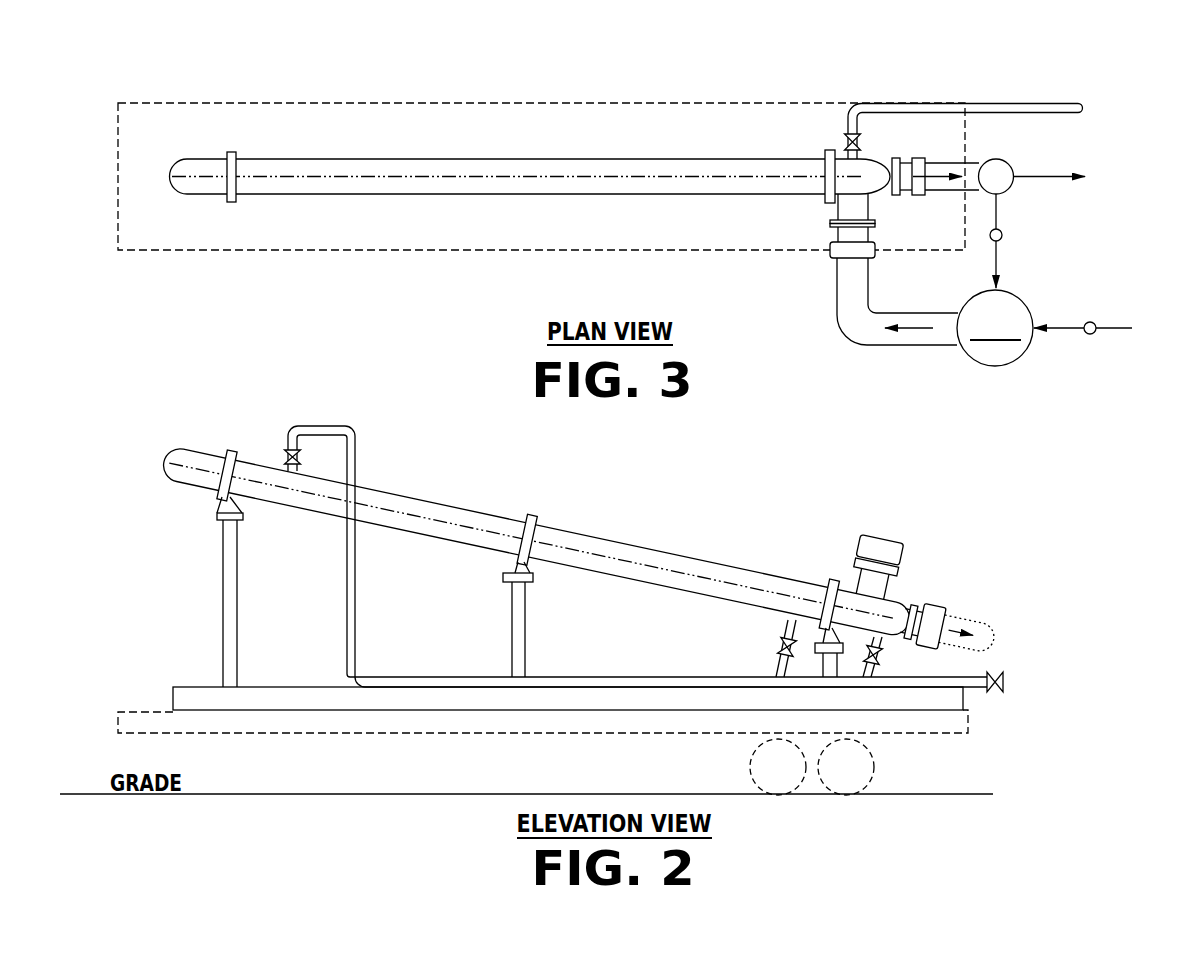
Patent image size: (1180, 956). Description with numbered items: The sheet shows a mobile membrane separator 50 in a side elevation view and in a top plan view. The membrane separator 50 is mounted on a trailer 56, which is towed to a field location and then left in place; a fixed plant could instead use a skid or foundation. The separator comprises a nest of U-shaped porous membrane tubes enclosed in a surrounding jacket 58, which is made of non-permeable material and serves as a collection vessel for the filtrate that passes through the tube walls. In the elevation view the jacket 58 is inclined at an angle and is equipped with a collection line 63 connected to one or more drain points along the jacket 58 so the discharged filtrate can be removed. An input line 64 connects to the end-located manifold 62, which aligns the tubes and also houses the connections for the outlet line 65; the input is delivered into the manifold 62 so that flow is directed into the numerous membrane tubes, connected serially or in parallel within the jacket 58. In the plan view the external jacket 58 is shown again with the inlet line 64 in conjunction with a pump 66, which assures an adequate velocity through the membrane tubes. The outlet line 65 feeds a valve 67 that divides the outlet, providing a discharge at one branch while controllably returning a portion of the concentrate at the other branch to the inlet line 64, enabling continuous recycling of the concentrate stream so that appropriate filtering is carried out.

In FIG. 3, the membrane separator 50 is at (530, 236).
In FIG. 2, the membrane separator 50 is at (537, 562).
In FIG. 3, the trailer 56 is at (541, 212).
In FIG. 2, the trailer 56 is at (597, 747).
In FIG. 3, the jacket 58 is at (741, 229).
In FIG. 2, the jacket 58 is at (673, 575).
In FIG. 2, the manifold 62 is at (926, 715).
In FIG. 3, the collection line 63 is at (1009, 88).
In FIG. 2, the collection line 63 is at (644, 559).
In FIG. 3, the input line 64 is at (918, 318).
In FIG. 2, the input line 64 is at (932, 554).
In FIG. 3, the outlet line 65 is at (984, 106).
In FIG. 2, the outlet line 65 is at (979, 614).
In FIG. 3, the pump 66 is at (1044, 368).
In FIG. 3, the valve 67 is at (1048, 223).